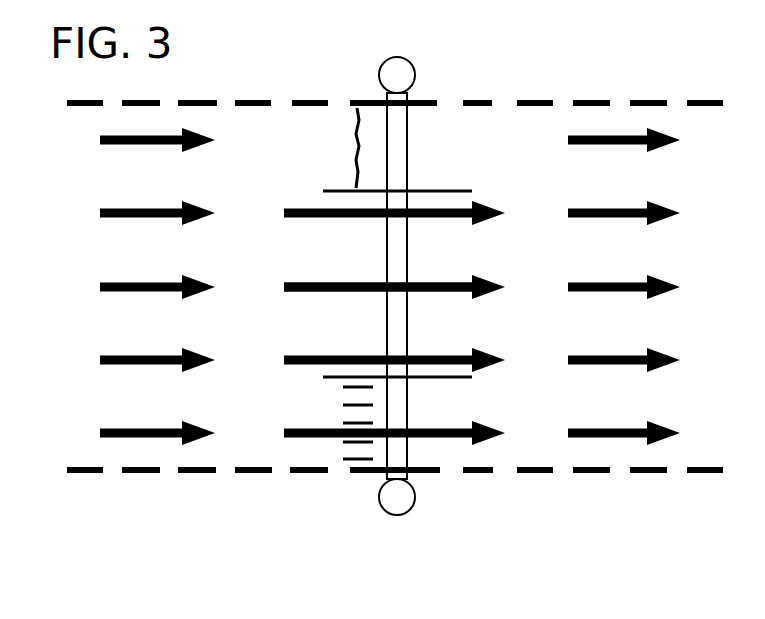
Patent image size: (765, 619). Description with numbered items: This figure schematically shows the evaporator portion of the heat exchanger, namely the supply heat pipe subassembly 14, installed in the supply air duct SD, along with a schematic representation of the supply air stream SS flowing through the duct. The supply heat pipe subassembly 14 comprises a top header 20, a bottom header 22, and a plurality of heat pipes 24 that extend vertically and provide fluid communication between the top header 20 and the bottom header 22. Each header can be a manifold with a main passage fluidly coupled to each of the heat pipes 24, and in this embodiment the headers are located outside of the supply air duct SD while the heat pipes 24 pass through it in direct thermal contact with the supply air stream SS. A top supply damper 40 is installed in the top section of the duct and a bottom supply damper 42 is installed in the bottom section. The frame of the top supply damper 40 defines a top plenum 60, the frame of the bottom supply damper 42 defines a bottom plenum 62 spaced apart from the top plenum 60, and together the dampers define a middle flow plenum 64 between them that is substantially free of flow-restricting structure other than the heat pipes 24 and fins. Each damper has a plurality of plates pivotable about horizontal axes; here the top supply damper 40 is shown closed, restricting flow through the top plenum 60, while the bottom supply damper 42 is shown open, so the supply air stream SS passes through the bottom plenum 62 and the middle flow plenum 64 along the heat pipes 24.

The supply heat pipe subassembly 14 is at (370, 552).
The top header 20 is at (415, 75).
The bottom header 22 is at (410, 508).
The heat pipes 24 is at (407, 253).
The top supply damper 40 is at (355, 155).
The bottom supply damper 42 is at (343, 442).
The top plenum 60 is at (430, 150).
The bottom plenum 62 is at (440, 443).
The middle flow plenum 64 is at (345, 304).
The supply air stream SS is at (100, 436).
The supply air duct SD is at (128, 472).